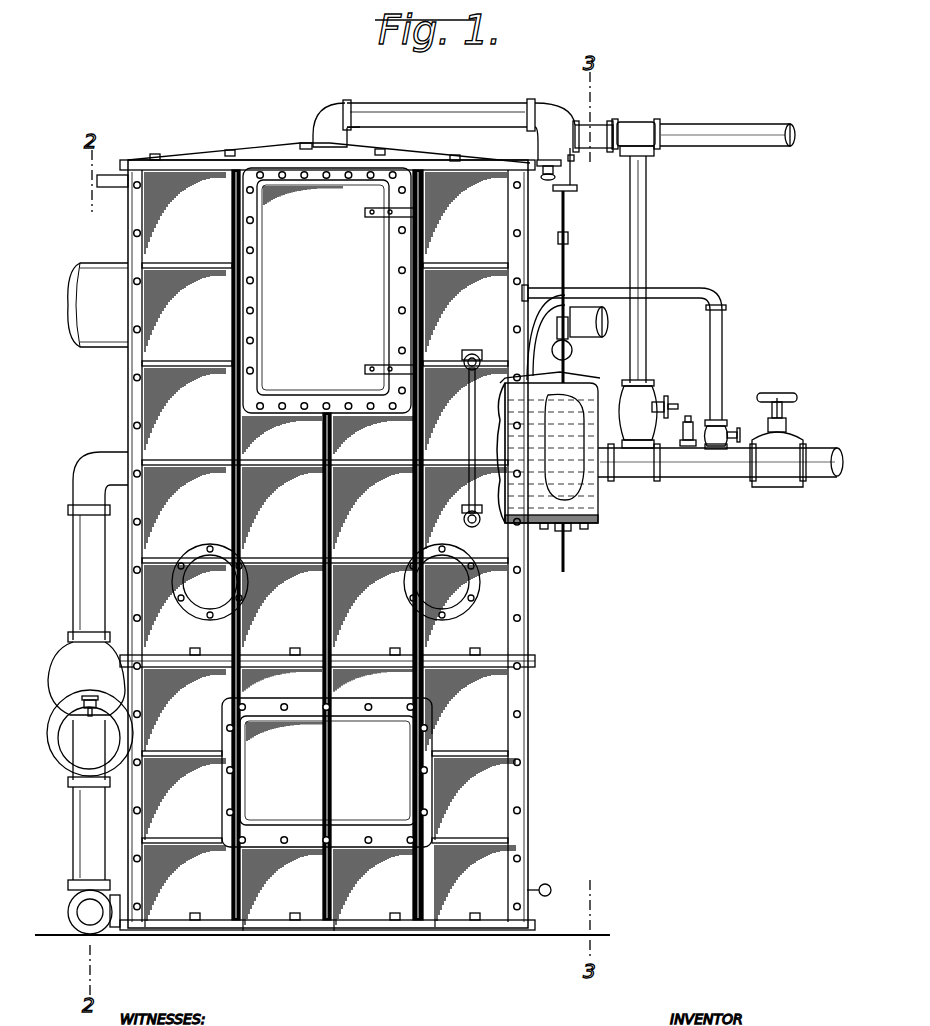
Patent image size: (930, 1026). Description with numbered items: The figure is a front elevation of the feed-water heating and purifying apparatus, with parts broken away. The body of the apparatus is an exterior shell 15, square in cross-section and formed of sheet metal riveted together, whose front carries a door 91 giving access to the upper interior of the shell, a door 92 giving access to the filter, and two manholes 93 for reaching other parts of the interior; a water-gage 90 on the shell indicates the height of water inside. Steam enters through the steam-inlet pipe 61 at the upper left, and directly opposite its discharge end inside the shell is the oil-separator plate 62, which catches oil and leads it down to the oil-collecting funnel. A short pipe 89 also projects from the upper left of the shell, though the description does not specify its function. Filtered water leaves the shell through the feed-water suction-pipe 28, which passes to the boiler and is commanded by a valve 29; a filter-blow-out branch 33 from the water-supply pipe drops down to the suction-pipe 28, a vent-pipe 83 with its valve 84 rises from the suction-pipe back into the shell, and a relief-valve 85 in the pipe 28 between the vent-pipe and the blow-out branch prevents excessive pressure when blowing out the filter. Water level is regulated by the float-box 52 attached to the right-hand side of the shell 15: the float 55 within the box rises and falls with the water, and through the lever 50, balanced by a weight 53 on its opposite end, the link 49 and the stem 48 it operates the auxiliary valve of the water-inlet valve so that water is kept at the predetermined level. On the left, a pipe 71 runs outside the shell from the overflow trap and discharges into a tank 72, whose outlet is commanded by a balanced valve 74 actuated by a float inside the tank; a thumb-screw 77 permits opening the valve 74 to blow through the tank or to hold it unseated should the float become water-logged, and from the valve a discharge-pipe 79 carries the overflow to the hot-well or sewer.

The exterior shell 15 is at (590, 380).
The feed-water suction-pipe 28 is at (708, 478).
The valve 29 is at (777, 440).
The filter-blow-out branch 33 is at (646, 262).
The stem 48 is at (565, 209).
The link 49 is at (565, 265).
The lever 50 is at (568, 318).
The float-box 52 is at (598, 508).
The weight 53 is at (573, 350).
The float 55 is at (590, 528).
The steam-inlet pipe 61 is at (98, 305).
The plate 62 is at (564, 443).
The pipe 71 is at (90, 572).
The tank 72 is at (86, 678).
The balanced valve 74 is at (78, 745).
The thumb-screw 77 is at (82, 697).
The discharge-pipe 79 is at (78, 856).
The vent-pipe 83 is at (722, 362).
The valve 84 is at (720, 424).
The relief-valve 85 is at (688, 416).
The pipe 89 is at (110, 175).
The water-gage 90 is at (457, 438).
The door 91 is at (329, 290).
The door 92 is at (327, 772).
The manholes 93 is at (326, 582).